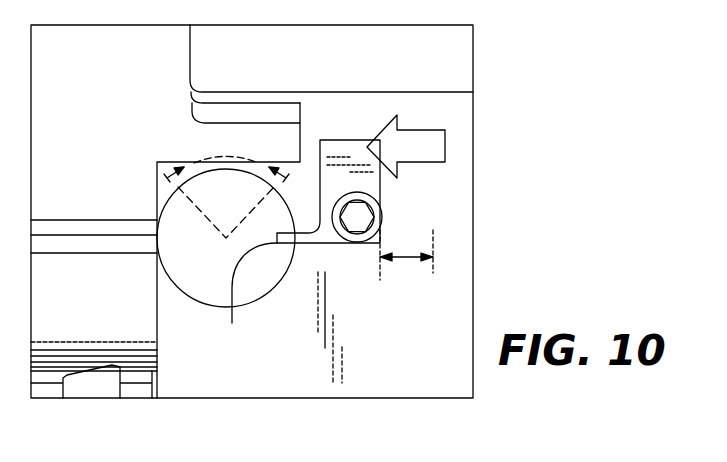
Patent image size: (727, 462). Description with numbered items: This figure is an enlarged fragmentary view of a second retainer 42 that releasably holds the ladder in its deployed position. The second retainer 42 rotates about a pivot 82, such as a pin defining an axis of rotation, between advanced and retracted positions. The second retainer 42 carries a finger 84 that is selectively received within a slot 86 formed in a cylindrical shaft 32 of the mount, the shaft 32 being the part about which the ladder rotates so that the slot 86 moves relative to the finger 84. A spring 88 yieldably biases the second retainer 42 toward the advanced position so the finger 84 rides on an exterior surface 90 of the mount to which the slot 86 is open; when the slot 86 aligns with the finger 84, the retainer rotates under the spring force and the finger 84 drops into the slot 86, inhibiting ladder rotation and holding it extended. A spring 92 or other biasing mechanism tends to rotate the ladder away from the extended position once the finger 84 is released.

The second retainer 42 is at (311, 130).
The spring 92 is at (203, 162).
The cylindrical shaft 32 is at (193, 217).
The slot 86 is at (248, 298).
The finger 84 is at (310, 243).
The pivot 82 is at (357, 218).
The spring 88 is at (407, 258).
The exterior surface 90 is at (197, 300).